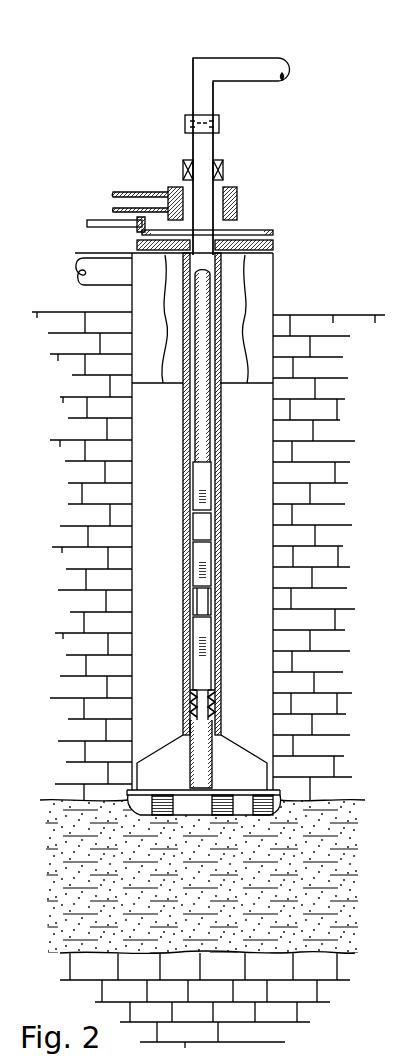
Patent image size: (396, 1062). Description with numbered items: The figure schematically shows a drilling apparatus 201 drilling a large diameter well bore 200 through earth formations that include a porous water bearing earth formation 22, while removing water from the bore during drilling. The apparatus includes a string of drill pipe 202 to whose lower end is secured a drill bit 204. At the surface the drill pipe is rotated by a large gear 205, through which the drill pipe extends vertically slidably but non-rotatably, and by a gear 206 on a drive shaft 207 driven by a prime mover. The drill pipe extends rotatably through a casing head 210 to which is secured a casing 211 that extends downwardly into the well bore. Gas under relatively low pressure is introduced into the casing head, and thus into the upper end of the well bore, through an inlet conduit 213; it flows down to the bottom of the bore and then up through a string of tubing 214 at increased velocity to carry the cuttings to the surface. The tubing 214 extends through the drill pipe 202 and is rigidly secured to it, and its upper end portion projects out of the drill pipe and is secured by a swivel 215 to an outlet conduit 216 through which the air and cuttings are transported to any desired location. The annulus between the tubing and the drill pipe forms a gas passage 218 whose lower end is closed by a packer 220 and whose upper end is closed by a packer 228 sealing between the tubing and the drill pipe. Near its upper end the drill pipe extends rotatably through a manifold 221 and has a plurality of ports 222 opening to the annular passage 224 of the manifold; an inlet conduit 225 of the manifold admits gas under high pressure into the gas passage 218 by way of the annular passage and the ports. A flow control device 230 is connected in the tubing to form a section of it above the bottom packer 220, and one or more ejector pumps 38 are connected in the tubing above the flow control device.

The outlet conduit 216 is at (266, 58).
The swivel 215 is at (220, 118).
The packer 228 is at (246, 145).
The annular passage 224 is at (184, 171).
The ports 222 is at (225, 182).
The manifold 221 is at (238, 200).
The inlet conduit 225 is at (128, 193).
The drive shaft 207 is at (137, 228).
The gear 206 is at (133, 220).
The large gear 205 is at (243, 232).
The drilling apparatus 201 is at (289, 243).
The casing head 210 is at (277, 269).
The inlet conduit 213 is at (77, 283).
The casing 211 is at (140, 383).
The well bore 200 is at (265, 417).
The gas passage 218 is at (221, 433).
The ejector pumps 38 is at (212, 481).
The drill pipe 202 is at (218, 552).
The tubing 214 is at (203, 603).
The flow control device 230 is at (203, 631).
The packer 220 is at (220, 699).
The drill bit 204 is at (243, 744).
The earth formation 22 is at (70, 897).